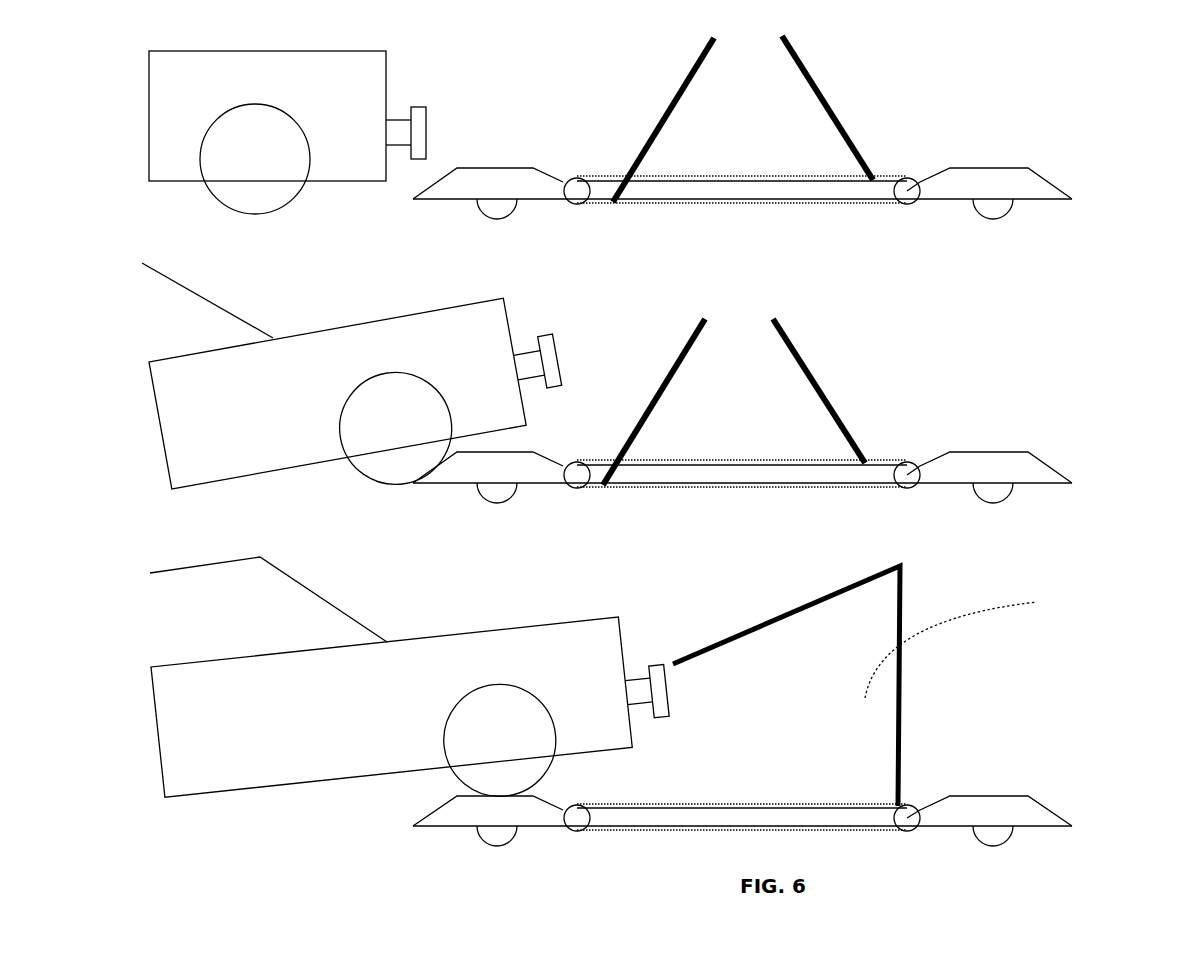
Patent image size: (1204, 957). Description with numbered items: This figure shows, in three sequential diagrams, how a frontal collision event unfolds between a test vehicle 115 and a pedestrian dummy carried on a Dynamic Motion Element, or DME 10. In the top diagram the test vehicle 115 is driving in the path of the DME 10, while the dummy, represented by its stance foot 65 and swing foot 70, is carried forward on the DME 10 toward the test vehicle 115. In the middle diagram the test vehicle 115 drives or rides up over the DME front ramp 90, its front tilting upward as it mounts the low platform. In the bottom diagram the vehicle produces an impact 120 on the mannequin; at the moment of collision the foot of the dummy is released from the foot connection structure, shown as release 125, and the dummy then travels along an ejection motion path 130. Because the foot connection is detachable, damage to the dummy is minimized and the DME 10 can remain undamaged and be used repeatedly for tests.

The Dynamic Motion Element (DME) 10 is at (975, 147).
The stance foot 65 is at (660, 130).
The swing foot 70 is at (818, 88).
The DME front ramp 90 is at (430, 187).
The test vehicle 115 is at (357, 147).
The impact on mannequin 120 is at (683, 655).
The release from foot connection structure 125 is at (617, 832).
The mannequin (dummy) ejection motion 130 is at (1040, 600).